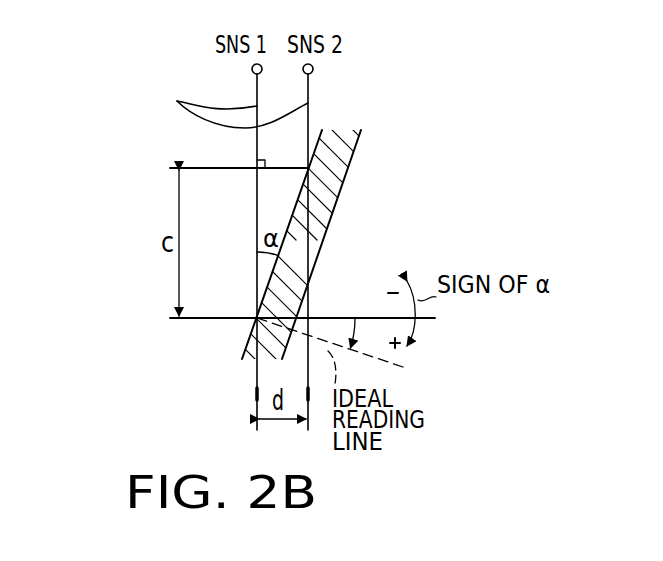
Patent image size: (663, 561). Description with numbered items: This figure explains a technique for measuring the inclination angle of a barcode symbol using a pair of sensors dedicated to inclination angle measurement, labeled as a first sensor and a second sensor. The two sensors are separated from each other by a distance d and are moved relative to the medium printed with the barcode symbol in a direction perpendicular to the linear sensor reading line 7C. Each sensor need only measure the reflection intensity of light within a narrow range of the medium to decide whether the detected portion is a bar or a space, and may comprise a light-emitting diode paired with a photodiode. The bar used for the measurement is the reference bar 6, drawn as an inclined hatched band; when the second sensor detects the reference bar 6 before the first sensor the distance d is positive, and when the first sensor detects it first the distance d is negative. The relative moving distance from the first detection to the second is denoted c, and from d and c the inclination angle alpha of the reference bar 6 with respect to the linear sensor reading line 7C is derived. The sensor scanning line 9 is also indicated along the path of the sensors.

The sensor scanning line 9 is at (183, 98).
The reference bar 6 is at (355, 150).
The linear sensor reading line 7C is at (360, 318).